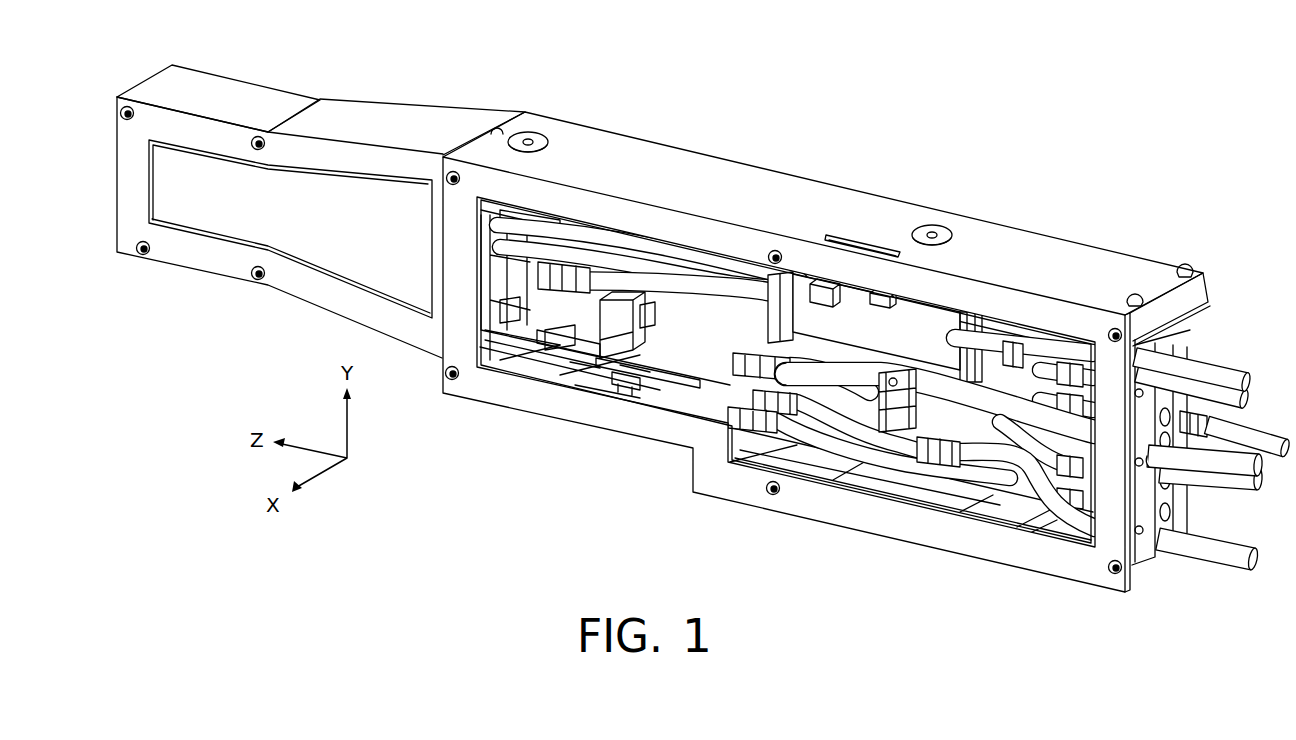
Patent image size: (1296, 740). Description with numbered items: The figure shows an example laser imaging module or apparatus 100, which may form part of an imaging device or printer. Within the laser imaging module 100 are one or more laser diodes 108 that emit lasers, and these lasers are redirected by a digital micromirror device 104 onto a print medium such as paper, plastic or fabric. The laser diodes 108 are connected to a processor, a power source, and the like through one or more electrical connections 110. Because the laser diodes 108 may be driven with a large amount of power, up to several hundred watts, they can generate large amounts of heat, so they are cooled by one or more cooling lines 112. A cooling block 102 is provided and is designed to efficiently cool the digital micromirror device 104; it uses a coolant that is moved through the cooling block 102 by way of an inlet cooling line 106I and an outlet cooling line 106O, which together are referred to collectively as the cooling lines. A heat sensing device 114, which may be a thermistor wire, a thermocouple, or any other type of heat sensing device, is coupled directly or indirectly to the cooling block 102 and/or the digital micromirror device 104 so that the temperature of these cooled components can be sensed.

The laser imaging module 100 is at (843, 121).
The cooling block 102 is at (623, 368).
The digital micromirror device 104 is at (637, 363).
The inlet cooling line 106I is at (750, 403).
The outlet cooling line 106O is at (768, 425).
The laser diodes 108 is at (877, 408).
The electrical connections 110 is at (985, 412).
The cooling lines 112 is at (951, 471).
The heat sensing device 114 is at (768, 458).